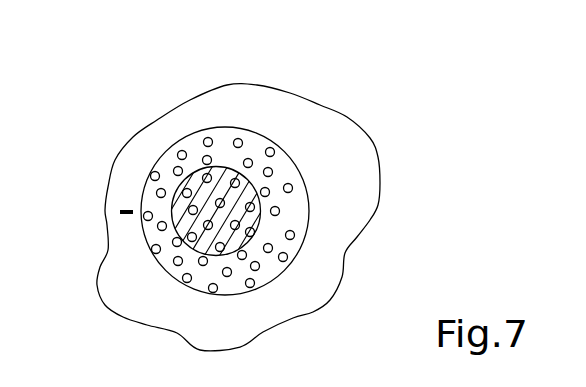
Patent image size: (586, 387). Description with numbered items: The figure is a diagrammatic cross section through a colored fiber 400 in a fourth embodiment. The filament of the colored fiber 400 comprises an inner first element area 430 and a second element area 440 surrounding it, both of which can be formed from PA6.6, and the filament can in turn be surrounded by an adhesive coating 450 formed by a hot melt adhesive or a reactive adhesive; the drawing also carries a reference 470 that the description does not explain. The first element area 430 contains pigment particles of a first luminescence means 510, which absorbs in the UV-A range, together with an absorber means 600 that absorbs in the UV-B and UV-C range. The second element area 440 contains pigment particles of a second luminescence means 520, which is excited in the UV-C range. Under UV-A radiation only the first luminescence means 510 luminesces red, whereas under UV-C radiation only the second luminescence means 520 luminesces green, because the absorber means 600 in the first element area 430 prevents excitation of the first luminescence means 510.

The colored fiber 400 is at (324, 104).
The adhesive coating 450 is at (360, 163).
The outer ring region 470 is at (183, 138).
The second element area 440 is at (170, 219).
The first element area 430 is at (152, 222).
The second luminescence means 520 is at (182, 280).
The first luminescence means 510 is at (259, 270).
The absorber means 600 is at (239, 245).